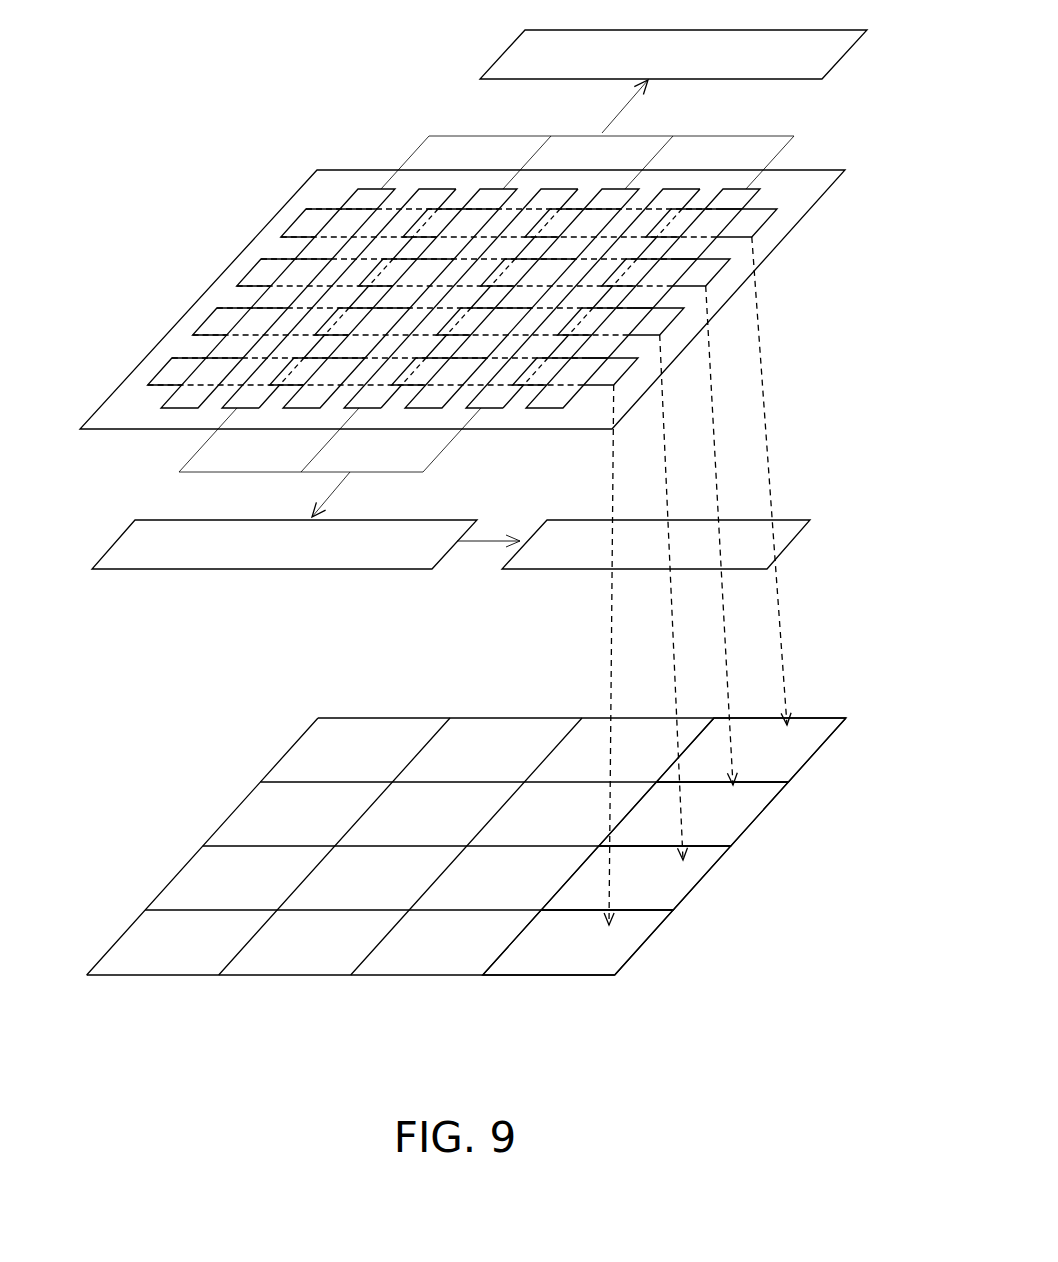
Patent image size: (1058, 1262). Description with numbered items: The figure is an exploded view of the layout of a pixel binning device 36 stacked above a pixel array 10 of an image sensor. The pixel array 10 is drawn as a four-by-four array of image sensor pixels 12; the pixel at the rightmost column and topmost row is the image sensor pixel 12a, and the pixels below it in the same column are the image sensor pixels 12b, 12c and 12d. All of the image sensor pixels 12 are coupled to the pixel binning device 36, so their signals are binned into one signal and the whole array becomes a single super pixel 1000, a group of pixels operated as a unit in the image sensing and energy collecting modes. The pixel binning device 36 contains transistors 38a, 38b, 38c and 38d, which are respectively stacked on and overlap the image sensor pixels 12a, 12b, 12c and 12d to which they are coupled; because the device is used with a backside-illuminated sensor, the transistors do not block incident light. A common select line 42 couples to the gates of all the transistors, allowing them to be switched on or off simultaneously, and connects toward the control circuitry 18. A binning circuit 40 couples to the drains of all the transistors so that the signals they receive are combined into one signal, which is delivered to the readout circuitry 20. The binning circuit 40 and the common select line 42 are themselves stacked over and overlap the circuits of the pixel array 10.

The pixel array 10 is at (400, 703).
The image sensor pixel 12 is at (385, 846).
The image sensor pixel 12a is at (751, 750).
The image sensor pixel 12b is at (694, 814).
The image sensor pixel 12c is at (636, 878).
The image sensor pixel 12d is at (578, 942).
The control circuitry 18 is at (503, 53).
The readout circuitry 20 is at (113, 543).
The pixel binning device 36 is at (790, 123).
The transistor 38a is at (770, 230).
The transistor 38b is at (722, 278).
The transistor 38c is at (676, 330).
The transistor 38d is at (630, 378).
The binning circuit 40 is at (360, 188).
The common select line 42 is at (605, 125).
The super pixel 1000 is at (793, 536).